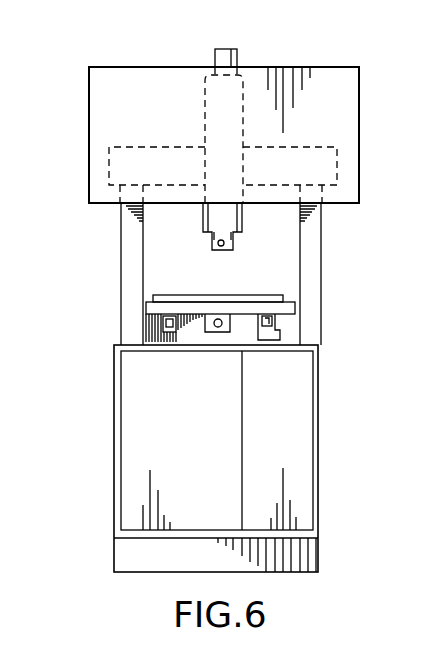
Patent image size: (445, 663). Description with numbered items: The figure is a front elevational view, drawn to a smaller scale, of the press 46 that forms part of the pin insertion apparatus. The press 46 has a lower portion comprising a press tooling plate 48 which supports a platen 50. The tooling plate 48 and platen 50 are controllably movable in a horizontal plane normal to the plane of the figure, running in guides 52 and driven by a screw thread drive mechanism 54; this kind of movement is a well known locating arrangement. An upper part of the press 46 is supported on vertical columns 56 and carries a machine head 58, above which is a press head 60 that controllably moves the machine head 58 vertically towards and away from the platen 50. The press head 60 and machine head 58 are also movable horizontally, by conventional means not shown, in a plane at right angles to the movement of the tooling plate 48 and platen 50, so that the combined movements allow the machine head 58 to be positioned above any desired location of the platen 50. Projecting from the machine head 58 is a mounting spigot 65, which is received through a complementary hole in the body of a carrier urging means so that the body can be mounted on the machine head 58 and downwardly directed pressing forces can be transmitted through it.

The press 46 is at (335, 292).
The press tooling plate 48 is at (153, 307).
The platen 50 is at (157, 292).
The guides 52 is at (173, 342).
The screw thread drive mechanism 54 is at (217, 327).
The vertical columns 56 is at (128, 242).
The machine head 58 is at (220, 218).
The press head 60 is at (243, 138).
The mounting spigot 65 is at (221, 247).